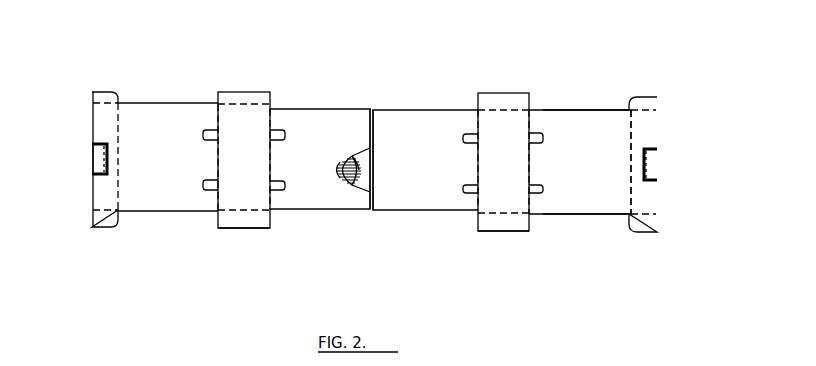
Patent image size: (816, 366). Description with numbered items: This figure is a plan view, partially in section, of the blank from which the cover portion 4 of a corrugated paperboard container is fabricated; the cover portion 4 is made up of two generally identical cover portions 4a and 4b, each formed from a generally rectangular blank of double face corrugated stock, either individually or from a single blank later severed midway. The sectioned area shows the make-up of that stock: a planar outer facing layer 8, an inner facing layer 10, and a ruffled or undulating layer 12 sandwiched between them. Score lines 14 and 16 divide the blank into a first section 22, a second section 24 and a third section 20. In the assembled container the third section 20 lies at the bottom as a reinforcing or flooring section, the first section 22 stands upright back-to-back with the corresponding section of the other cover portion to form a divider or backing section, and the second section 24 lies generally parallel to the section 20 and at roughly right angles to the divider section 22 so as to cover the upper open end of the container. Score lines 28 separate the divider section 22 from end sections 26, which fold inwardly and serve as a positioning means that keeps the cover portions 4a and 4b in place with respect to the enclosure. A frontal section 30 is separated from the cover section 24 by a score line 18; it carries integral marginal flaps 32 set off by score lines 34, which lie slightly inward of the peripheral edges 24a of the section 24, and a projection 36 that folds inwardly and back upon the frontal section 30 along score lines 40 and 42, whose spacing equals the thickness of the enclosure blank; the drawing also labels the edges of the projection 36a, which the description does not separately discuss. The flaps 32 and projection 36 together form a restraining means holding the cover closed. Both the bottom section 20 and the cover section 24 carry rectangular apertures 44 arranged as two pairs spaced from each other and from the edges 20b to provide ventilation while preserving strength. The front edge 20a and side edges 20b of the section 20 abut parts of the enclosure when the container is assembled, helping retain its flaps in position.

The cover portion 4 is at (378, 56).
The cover portion 4a is at (228, 243).
The cover portion 4b is at (511, 247).
The outer facing layer 8 is at (363, 182).
The inner facing layer 10 is at (340, 180).
The undulating layer 12 is at (352, 156).
The score line 14 is at (271, 162).
The score line 16 is at (219, 168).
The score line 18 is at (118, 126).
The third section 20 is at (374, 159).
The front edge 20a is at (375, 132).
The peripheral edges 20b is at (325, 209).
The first section 22 is at (503, 162).
The second section 24 is at (586, 162).
The peripheral edges 24a is at (588, 108).
The end sections 26 is at (238, 98).
The score lines 28 is at (258, 106).
The frontal section 30 is at (105, 123).
The marginal flaps 32 is at (103, 99).
The score lines 34 is at (105, 210).
The projection 36 is at (100, 160).
The notch edges 36a is at (108, 172).
The score line 40 is at (645, 164).
The score line 42 is at (103, 165).
The apertures 44 is at (286, 134).